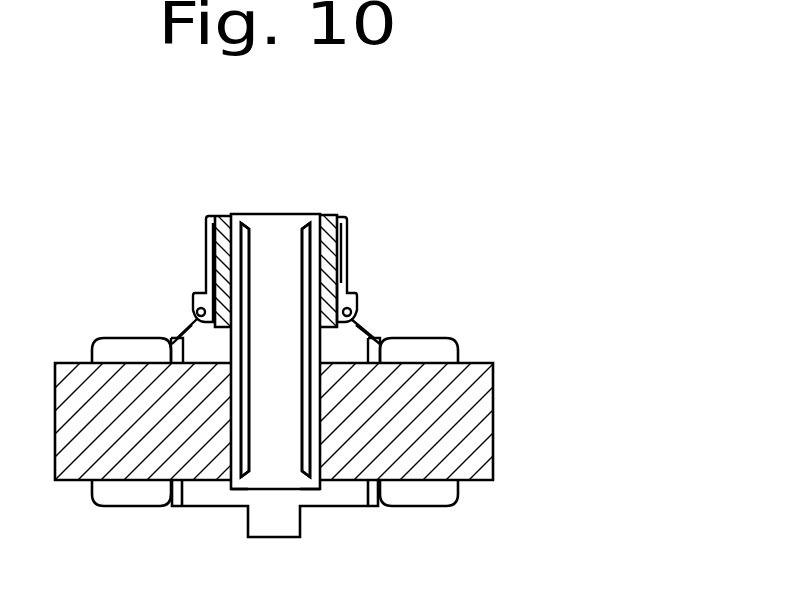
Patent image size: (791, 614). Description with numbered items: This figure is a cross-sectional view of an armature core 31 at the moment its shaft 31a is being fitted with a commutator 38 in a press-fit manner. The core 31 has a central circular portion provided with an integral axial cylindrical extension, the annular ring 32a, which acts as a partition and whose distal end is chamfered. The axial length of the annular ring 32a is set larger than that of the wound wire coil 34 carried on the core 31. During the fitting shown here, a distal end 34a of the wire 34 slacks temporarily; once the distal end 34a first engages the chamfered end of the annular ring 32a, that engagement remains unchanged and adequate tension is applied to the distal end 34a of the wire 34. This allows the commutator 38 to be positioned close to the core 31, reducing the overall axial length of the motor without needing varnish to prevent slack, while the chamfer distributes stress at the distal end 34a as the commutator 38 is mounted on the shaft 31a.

The armature core 31 is at (505, 422).
The shaft 31a is at (290, 220).
The commutator 38 is at (338, 215).
The distal end of the wire 34a is at (378, 322).
The annular ring 32a is at (170, 337).
The wound wire coil 34 is at (427, 347).